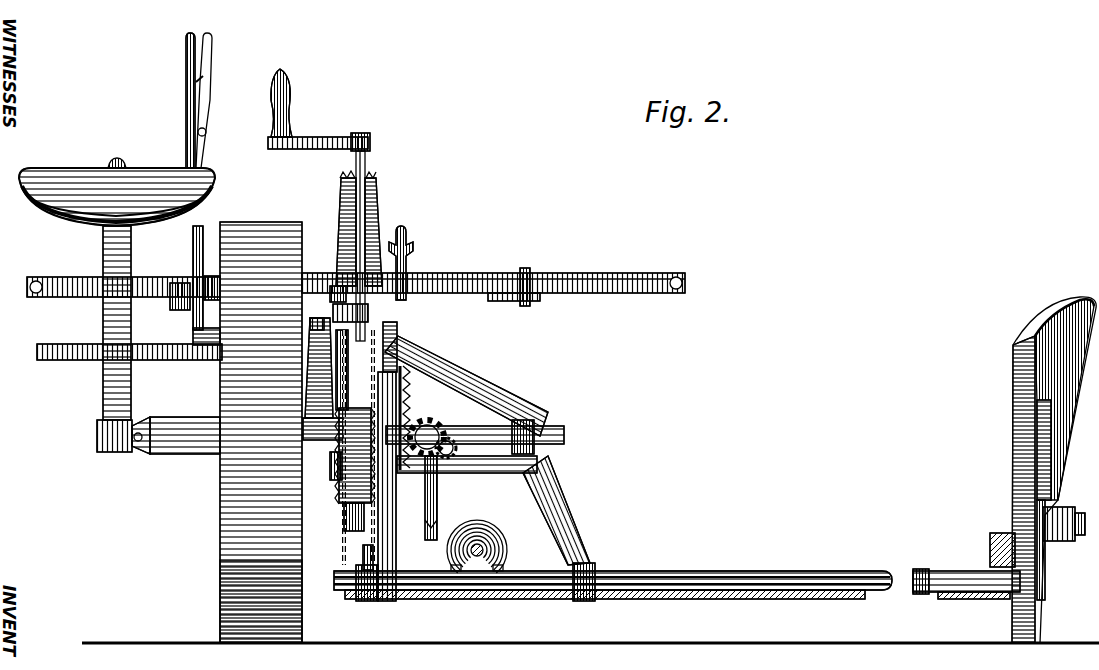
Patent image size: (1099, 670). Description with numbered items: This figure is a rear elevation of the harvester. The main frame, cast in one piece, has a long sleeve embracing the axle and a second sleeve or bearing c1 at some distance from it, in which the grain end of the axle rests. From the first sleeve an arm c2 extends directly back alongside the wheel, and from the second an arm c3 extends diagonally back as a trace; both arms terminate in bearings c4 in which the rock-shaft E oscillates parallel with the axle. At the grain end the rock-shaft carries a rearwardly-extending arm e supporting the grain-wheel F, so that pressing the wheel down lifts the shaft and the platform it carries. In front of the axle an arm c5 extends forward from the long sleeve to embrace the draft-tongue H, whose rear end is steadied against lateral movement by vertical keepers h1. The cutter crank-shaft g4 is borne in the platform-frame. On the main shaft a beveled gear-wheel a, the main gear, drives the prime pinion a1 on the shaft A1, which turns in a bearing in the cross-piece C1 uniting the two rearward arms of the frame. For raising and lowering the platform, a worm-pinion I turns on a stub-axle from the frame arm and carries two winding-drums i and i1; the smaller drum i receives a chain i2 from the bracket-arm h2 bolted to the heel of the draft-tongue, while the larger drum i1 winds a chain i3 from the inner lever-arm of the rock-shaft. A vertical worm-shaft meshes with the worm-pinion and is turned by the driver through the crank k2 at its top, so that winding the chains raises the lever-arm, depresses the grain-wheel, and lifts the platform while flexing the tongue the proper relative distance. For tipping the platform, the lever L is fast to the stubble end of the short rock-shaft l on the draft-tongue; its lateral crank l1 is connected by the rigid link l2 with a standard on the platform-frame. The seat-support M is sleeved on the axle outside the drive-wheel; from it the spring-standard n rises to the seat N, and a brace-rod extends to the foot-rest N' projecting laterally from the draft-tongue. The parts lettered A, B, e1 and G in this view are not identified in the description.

The seat N is at (117, 183).
The lever L is at (188, 111).
The crank k2 is at (319, 205).
The draft-tongue H is at (377, 190).
The rigid link l2 is at (410, 256).
The short lateral arm or crank l1 is at (412, 281).
The bracket-arm h2 is at (330, 308).
The short rock-shaft l is at (210, 304).
The bearings c4 is at (309, 324).
The foot-rest N' is at (129, 340).
The spring-standard n is at (125, 323).
The vertical guides or keepers h1 is at (397, 355).
The chain i2 is at (312, 408).
The seat-support M is at (158, 424).
The frame standard B is at (261, 432).
The rearwardly-extending arm e is at (694, 497).
The winding-drum i is at (332, 470).
The worm-pinion I is at (345, 505).
The chain i3 is at (370, 522).
The standard e1 is at (363, 551).
The arm c2 is at (397, 486).
The winding-drum i1 is at (372, 480).
The shaft A1 is at (445, 498).
The beveled gear-wheel a is at (422, 418).
The beveled pinion a1 is at (450, 432).
The cross-piece C1 is at (478, 472).
The arm c3 is at (556, 510).
The second sleeve or bearing c1 is at (536, 428).
The shaft A is at (565, 437).
The arm c5 is at (490, 398).
The cutter crank-shaft g4 is at (494, 536).
The rock-shaft E is at (677, 567).
The base plate G is at (677, 606).
The grain-wheel F is at (1030, 463).